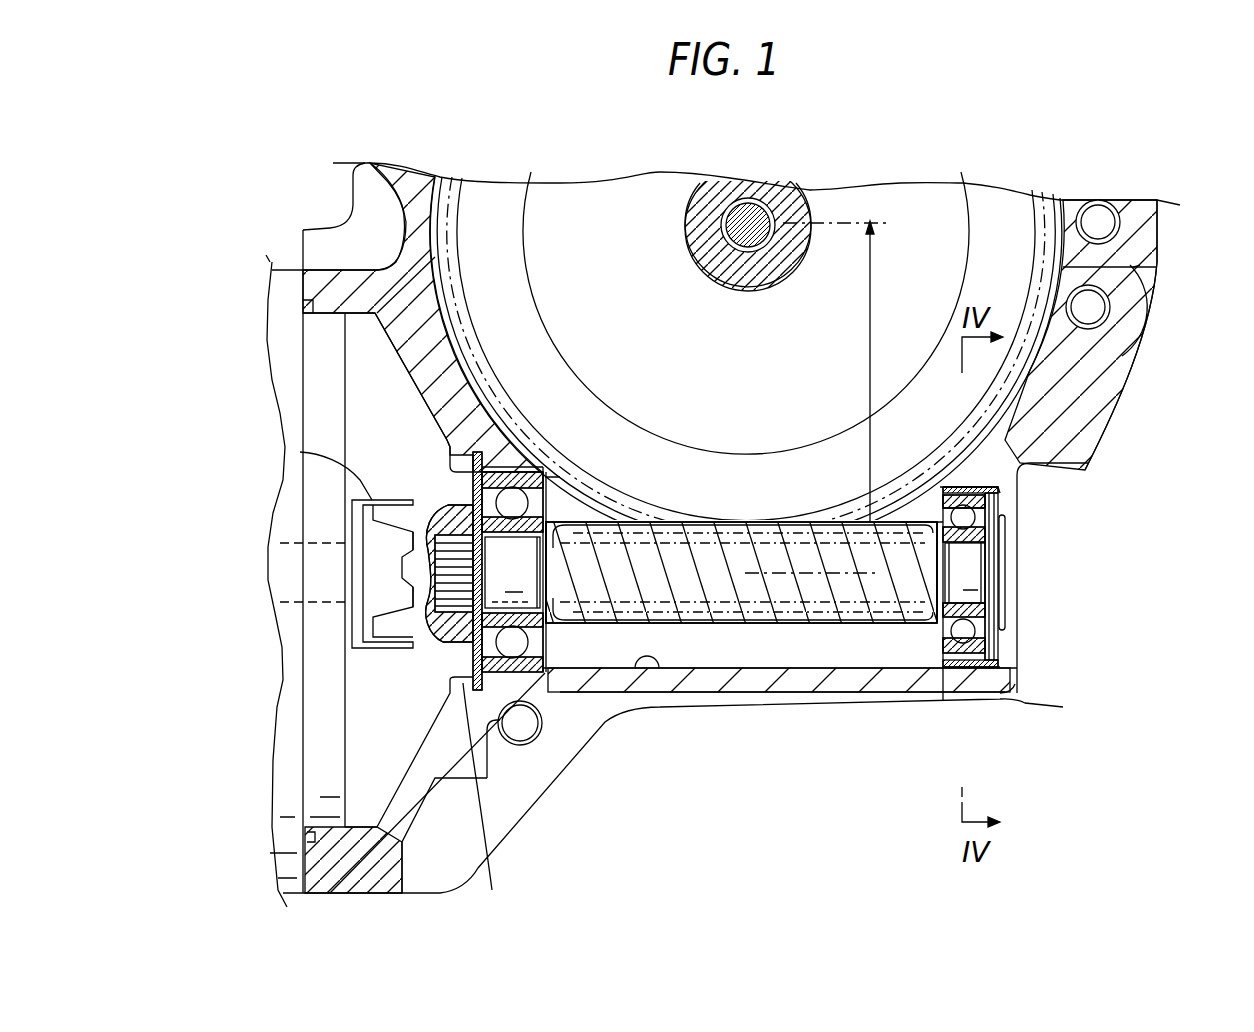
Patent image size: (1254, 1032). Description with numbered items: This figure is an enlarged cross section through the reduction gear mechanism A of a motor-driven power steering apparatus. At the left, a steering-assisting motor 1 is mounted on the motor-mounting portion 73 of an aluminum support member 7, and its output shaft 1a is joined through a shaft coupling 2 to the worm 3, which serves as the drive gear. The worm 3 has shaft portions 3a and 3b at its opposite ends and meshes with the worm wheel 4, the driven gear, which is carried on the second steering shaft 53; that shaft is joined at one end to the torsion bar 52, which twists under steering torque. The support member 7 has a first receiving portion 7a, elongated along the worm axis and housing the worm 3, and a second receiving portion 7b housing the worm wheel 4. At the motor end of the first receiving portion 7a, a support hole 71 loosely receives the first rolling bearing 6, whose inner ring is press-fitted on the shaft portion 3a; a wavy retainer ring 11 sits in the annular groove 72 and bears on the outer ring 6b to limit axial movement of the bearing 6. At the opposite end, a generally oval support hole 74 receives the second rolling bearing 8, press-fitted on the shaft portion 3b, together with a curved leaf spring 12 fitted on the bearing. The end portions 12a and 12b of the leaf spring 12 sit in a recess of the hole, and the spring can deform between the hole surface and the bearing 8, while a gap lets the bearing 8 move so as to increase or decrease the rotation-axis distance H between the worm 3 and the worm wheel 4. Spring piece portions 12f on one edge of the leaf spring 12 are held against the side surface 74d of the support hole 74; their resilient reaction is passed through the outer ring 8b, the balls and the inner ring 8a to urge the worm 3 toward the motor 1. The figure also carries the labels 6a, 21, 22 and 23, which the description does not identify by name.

The motor 1 is at (280, 270).
The output shaft 1a is at (290, 543).
The shaft coupling 2 is at (383, 497).
The worm 3 is at (800, 628).
The shaft portion 3a is at (470, 600).
The shaft portion 3b is at (975, 573).
The worm wheel 4 is at (1040, 377).
The first rolling bearing 6 is at (505, 677).
The bearing outer race 6a is at (548, 675).
The outer ring 6b is at (513, 677).
The support member 7 is at (700, 707).
The first receiving portion 7a is at (648, 670).
The second receiving portion 7b is at (1157, 267).
The second rolling bearing 8 is at (985, 645).
The inner ring 8a is at (913, 508).
The outer ring 8b is at (960, 488).
The retainer ring 11 is at (473, 680).
The curved leaf spring 12 is at (950, 670).
The end portion 12a is at (992, 660).
The end portion 12b is at (1000, 698).
The spring piece portions 12f is at (994, 497).
The impeller 21 is at (353, 508).
The impeller hub 22 is at (402, 500).
The impeller blade 23 is at (300, 452).
The torsion bar 52 is at (688, 242).
The second steering shaft 53 is at (712, 284).
The support hole 71 is at (537, 677).
The annular groove 72 is at (492, 885).
The motor-mounting portion 73 is at (357, 835).
The support hole 74 is at (945, 700).
The side surface 74d is at (1003, 512).
The reduction gear mechanism A is at (757, 645).
The rotation-axis distance H is at (878, 396).